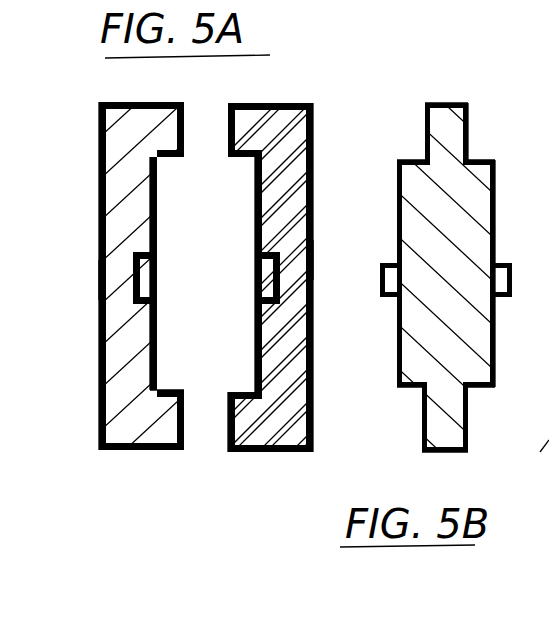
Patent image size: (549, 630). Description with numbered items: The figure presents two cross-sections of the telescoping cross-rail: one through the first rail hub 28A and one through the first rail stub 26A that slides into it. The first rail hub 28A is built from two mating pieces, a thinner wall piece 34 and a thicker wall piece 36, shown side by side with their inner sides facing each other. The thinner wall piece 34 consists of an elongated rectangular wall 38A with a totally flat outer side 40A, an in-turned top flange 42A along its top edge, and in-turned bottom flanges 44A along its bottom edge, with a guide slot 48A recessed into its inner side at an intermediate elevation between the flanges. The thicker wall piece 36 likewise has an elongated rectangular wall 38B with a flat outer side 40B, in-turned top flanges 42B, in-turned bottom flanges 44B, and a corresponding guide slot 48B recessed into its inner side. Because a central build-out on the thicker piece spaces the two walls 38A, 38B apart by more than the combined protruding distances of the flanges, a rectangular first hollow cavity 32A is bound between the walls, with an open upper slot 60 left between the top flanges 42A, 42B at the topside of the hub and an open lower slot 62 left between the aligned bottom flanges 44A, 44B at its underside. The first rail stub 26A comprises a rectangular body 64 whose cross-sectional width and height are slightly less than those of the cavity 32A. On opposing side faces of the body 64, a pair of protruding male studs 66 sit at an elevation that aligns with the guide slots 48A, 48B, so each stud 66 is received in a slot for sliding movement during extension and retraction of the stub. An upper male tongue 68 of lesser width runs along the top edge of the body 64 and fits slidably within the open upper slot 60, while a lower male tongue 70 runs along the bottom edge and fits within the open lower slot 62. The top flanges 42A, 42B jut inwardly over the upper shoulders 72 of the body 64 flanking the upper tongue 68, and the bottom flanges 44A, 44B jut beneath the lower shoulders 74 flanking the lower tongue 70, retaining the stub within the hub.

In FIG. 5B, the first rail stub 26A is at (449, 92).
In FIG. 5A, the first rail hub 28A is at (48, 148).
In FIG. 5A, the first hollow cavity 32A is at (270, 282).
In FIG. 5A, the thinner wall piece 34 is at (97, 432).
In FIG. 5B, the thinner wall piece 34 is at (538, 471).
In FIG. 5A, the thicker wall piece 36 is at (316, 98).
In FIG. 5A, the elongated rectangular wall 38A is at (97, 266).
In FIG. 5A, the elongated rectangular wall 38B is at (303, 242).
In FIG. 5A, the flat outer side 40A is at (98, 221).
In FIG. 5B, the flat outer side 40A is at (522, 274).
In FIG. 5A, the flat outer side 40B is at (317, 205).
In FIG. 5A, the in-turned top flange 42A is at (175, 158).
In FIG. 5A, the in-turned top flanges 42B is at (250, 154).
In FIG. 5A, the in-turned bottom flanges 44A is at (170, 390).
In FIG. 5A, the in-turned bottom flanges 44B is at (228, 408).
In FIG. 5A, the guide slot 48A is at (153, 277).
In FIG. 5A, the guide slot 48B is at (236, 296).
In FIG. 5A, the open upper slot 60 is at (205, 123).
In FIG. 5A, the open lower slot 62 is at (208, 438).
In FIG. 5B, the rectangular body 64 is at (468, 190).
In FIG. 5B, the male studs 66 is at (503, 280).
In FIG. 5B, the upper male tongue 68 is at (460, 118).
In FIG. 5B, the lower male tongue 70 is at (455, 443).
In FIG. 5B, the upper shoulders 72 is at (412, 160).
In FIG. 5B, the lower shoulders 74 is at (410, 390).